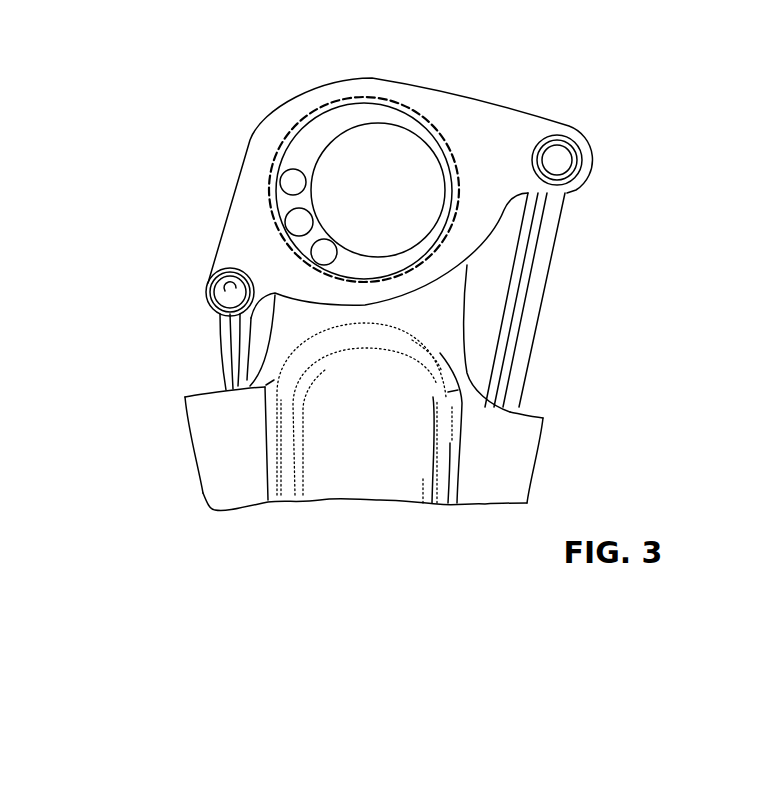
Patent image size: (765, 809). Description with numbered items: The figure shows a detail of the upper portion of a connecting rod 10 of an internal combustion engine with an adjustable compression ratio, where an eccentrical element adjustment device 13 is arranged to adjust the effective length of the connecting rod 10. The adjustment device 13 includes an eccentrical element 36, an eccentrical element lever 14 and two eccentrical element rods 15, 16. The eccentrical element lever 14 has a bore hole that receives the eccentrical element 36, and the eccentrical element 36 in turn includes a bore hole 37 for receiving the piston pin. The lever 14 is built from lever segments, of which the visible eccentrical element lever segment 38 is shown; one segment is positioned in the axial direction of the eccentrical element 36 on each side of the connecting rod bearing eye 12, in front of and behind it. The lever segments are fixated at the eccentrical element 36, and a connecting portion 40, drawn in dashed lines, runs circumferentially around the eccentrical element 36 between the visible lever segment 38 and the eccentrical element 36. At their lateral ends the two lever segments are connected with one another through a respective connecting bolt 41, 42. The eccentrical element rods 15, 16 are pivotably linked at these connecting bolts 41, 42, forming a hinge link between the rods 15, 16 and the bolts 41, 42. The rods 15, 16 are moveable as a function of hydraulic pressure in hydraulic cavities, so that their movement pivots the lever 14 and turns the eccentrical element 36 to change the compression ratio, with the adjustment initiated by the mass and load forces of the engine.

The connecting rod 10 is at (232, 464).
The connecting rod bearing eye 12 is at (317, 224).
The eccentrical element adjustment device 13 is at (317, 224).
The eccentrical element lever 14 is at (400, 224).
The eccentrical element rod 15 is at (235, 353).
The eccentrical element rod 16 is at (532, 262).
The eccentrical element 36 is at (307, 148).
The bore hole 37 is at (367, 145).
The eccentrical element lever segment 38 is at (502, 132).
The connecting portion 40 is at (413, 100).
The connecting bolt 41 is at (206, 286).
The connecting bolt 42 is at (558, 163).